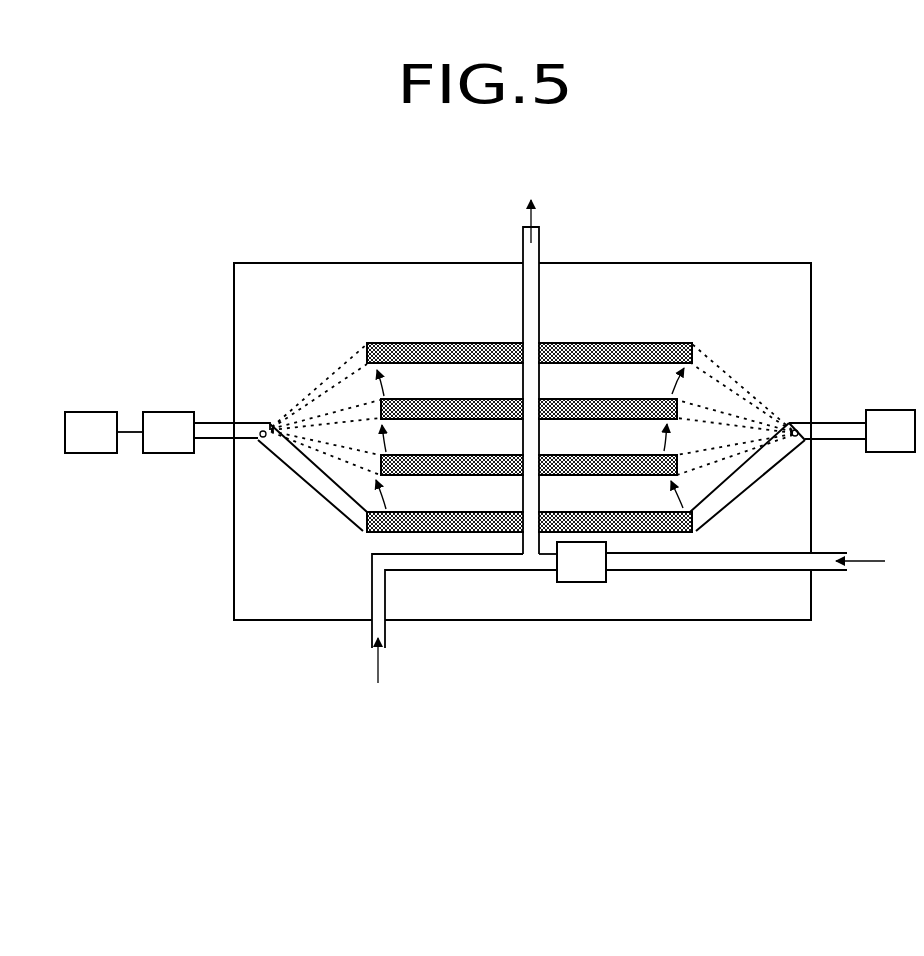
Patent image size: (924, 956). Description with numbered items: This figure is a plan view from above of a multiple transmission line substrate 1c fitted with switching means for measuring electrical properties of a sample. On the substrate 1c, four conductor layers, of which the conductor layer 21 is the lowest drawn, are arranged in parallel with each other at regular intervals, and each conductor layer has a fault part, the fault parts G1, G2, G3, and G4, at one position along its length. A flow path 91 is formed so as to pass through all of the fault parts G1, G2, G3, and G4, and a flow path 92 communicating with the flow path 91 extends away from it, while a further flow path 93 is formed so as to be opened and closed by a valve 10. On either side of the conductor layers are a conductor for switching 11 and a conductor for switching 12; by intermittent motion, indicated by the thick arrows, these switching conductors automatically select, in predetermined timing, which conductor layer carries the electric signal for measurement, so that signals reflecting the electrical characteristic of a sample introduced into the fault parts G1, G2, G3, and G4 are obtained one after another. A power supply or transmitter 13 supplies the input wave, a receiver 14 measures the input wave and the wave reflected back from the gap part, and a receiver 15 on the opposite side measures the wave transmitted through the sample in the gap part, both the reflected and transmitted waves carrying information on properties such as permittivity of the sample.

The multiple transmission line substrate 1c is at (717, 290).
The valve 10 is at (590, 584).
The conductor for switching 11 is at (318, 483).
The conductor for switching 12 is at (738, 483).
The power supply (transmitter) 13 is at (168, 418).
The receiver for measuring an input wave and a reflected wave 14 is at (90, 418).
The receiver for measuring a transmitted wave 15 is at (893, 410).
The conductor layer 21 is at (378, 536).
The flow path 91 is at (523, 300).
The flow path 92 is at (454, 560).
The flow path 93 is at (675, 560).
The fault part G1 is at (531, 522).
The fault part G2 is at (531, 465).
The fault part G3 is at (531, 408).
The fault part G4 is at (531, 352).